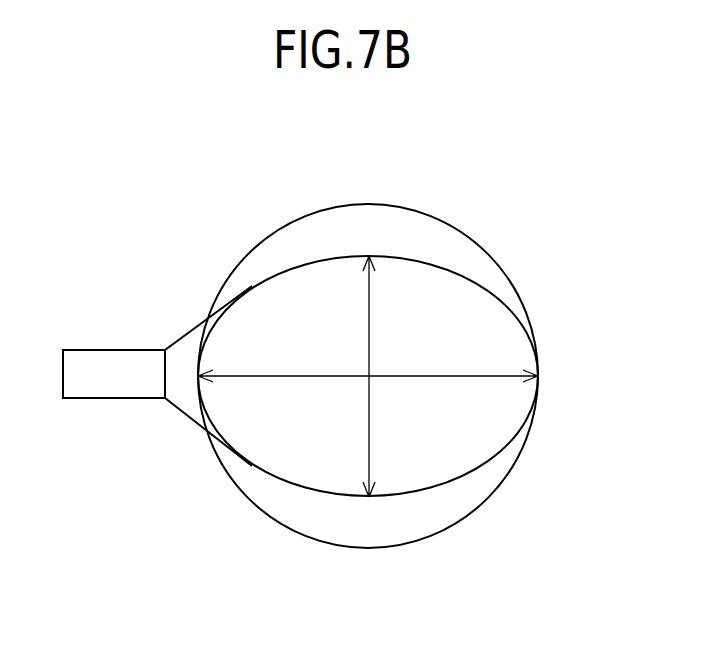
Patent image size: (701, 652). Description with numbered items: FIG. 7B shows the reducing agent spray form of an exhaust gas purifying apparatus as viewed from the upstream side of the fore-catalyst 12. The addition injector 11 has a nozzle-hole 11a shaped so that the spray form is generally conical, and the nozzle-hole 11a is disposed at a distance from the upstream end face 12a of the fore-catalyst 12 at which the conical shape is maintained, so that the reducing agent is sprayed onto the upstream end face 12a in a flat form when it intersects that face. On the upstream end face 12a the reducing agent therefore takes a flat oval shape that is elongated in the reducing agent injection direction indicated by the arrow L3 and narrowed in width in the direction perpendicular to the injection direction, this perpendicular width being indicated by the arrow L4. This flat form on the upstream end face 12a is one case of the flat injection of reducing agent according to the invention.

The addition injector 11 is at (115, 350).
The nozzle-hole 11a is at (166, 372).
The fore-catalyst 12 is at (365, 203).
The upstream end face 12a is at (455, 237).
The arrow indicating reducing agent injection direction L3 is at (472, 375).
The vertical diameter length L4 is at (370, 438).